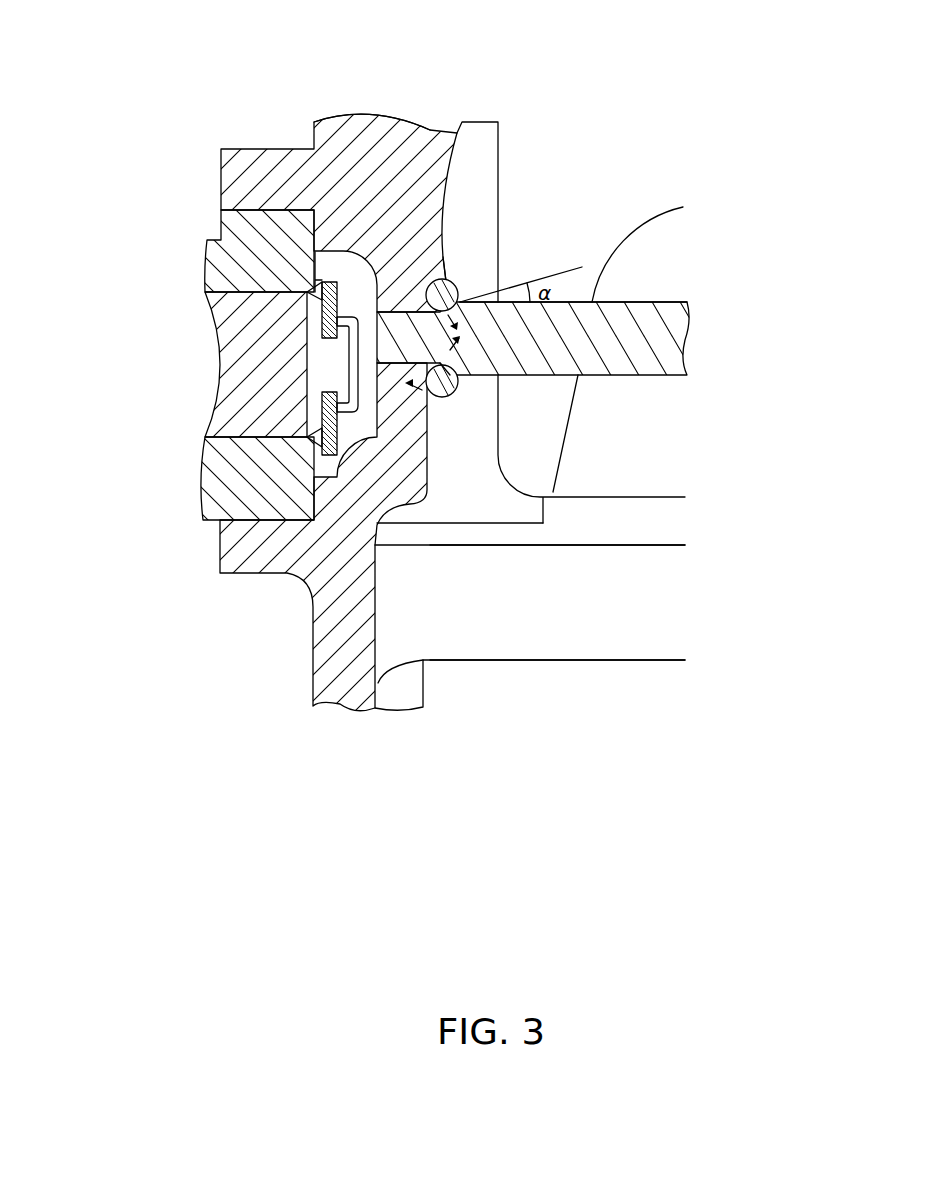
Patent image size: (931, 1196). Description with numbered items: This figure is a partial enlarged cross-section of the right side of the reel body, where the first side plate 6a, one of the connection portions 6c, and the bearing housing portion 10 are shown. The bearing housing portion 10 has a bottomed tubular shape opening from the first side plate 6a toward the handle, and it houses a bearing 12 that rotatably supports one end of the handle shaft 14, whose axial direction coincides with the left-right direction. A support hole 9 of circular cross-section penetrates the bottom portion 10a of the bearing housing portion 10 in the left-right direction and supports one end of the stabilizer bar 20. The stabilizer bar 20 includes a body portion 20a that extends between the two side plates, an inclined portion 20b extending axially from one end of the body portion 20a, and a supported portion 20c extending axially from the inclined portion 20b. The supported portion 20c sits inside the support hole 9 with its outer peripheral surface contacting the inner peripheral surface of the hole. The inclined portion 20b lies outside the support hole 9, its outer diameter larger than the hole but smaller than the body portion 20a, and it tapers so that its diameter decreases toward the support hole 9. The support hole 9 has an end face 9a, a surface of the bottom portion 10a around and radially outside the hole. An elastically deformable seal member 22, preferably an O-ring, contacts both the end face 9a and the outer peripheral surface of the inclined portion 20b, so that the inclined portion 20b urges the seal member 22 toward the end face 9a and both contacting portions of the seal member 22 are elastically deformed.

The first side plate 6a is at (338, 660).
The connection portion 6c is at (522, 625).
The support hole 9 is at (390, 312).
The end face 9a is at (457, 378).
The bearing housing portion 10 is at (232, 138).
The bottom portion 10a is at (423, 297).
The bearing 12 is at (222, 490).
The handle shaft 14 is at (247, 407).
The stabilizer bar 20 is at (673, 298).
The body portion 20a is at (647, 315).
The inclined portion 20b is at (462, 122).
The supported portion 20c is at (325, 121).
The seal member 22 is at (443, 398).